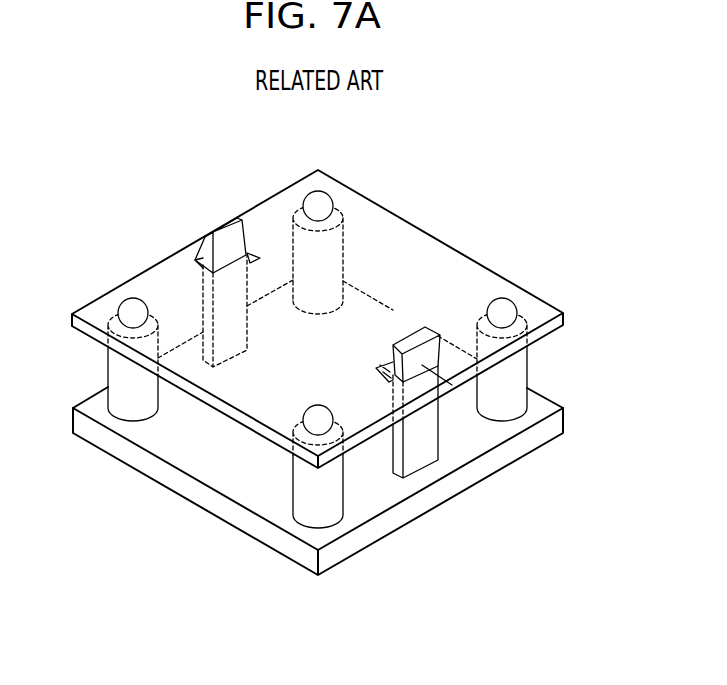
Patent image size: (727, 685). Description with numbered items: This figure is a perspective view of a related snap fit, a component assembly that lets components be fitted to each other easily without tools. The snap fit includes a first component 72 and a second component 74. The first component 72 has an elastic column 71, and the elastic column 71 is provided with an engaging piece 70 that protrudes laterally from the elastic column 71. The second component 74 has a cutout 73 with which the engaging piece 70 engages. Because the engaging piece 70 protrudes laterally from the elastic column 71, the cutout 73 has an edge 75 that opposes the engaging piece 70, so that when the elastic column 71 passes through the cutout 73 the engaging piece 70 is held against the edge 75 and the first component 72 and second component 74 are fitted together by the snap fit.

The engaging piece 70 is at (440, 336).
The elastic column 71 is at (423, 428).
The first component 72 is at (207, 458).
The cutout 73 is at (389, 365).
The second component 74 is at (173, 276).
The edge 75 is at (483, 381).